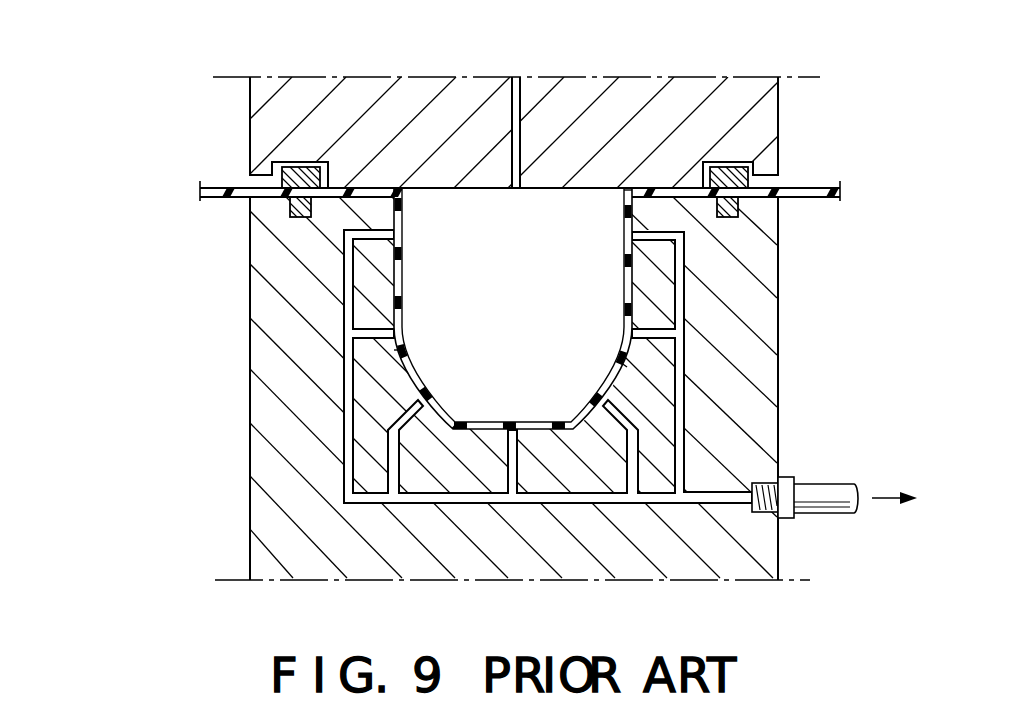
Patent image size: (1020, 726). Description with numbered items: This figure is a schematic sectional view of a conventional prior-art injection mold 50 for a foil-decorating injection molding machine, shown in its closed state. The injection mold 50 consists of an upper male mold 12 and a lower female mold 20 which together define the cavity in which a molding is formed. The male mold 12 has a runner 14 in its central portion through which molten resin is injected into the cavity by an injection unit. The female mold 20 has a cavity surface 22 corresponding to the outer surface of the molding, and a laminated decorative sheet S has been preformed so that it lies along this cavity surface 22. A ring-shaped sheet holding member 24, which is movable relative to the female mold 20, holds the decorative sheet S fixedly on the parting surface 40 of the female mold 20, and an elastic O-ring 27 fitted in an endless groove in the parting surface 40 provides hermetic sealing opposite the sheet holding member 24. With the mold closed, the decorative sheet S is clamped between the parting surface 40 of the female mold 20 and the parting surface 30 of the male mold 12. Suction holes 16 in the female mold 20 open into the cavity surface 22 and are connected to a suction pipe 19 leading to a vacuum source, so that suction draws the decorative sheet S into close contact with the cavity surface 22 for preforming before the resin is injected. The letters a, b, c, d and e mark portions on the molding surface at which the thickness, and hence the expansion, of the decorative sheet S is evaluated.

The injection mold 50 is at (148, 170).
The male mold 12 is at (245, 121).
The runner 14 is at (514, 80).
The sheet holding member 24 is at (298, 170).
The parting surface of the female mold 40 is at (366, 188).
The parting surface of the male mold 30 is at (661, 200).
The decorative sheet S is at (210, 194).
The elastic O-ring 27 is at (738, 216).
The cavity surface 22 is at (400, 289).
The female mold 20 is at (244, 401).
The suction holes 16 is at (633, 448).
The suction pipe 19 is at (836, 483).
The portion a is at (405, 190).
The portion b is at (406, 352).
The portion c is at (517, 421).
The portion d is at (612, 365).
The portion e is at (626, 192).